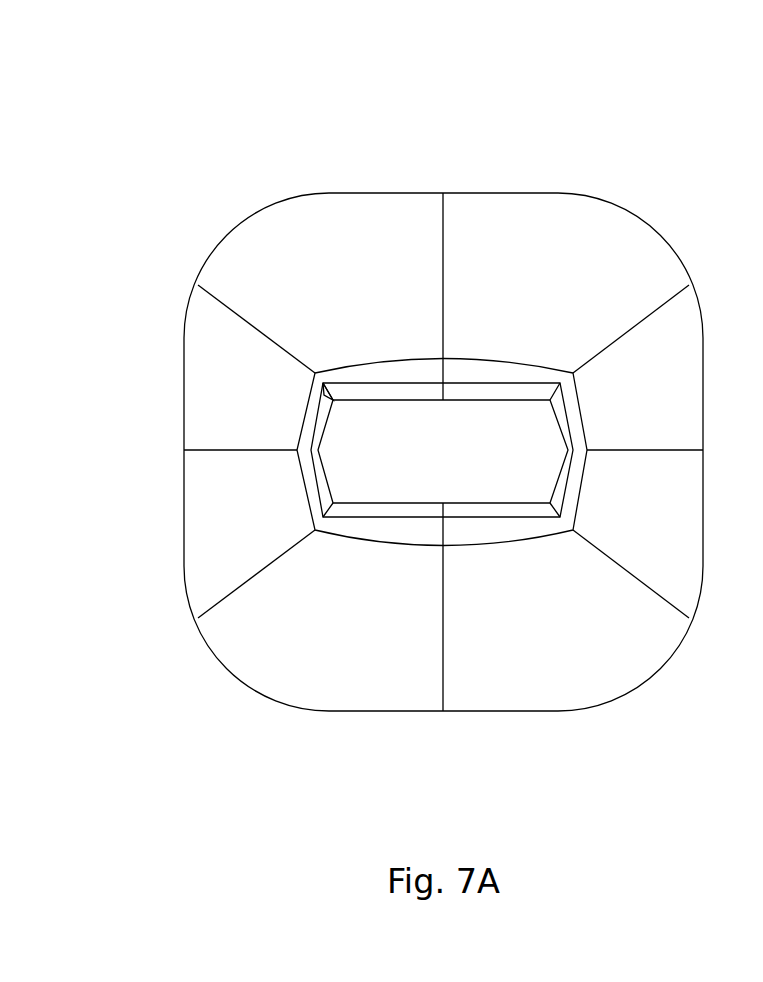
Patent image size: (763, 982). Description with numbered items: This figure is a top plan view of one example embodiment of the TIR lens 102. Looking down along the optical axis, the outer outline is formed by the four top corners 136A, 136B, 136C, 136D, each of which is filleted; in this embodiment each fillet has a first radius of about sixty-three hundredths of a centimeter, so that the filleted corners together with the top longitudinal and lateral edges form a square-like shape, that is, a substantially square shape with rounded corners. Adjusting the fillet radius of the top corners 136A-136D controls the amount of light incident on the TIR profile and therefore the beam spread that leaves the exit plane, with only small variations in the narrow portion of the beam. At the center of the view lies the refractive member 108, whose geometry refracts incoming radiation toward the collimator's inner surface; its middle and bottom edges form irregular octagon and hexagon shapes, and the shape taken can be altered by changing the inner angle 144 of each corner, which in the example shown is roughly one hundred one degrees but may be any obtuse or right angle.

The TIR lens 102 is at (443, 102).
The refractive member 108 is at (460, 465).
The top corner 136A is at (243, 218).
The top corner 136B is at (247, 683).
The top corner 136C is at (640, 682).
The top corner 136D is at (652, 228).
The inner angle 144 is at (333, 402).